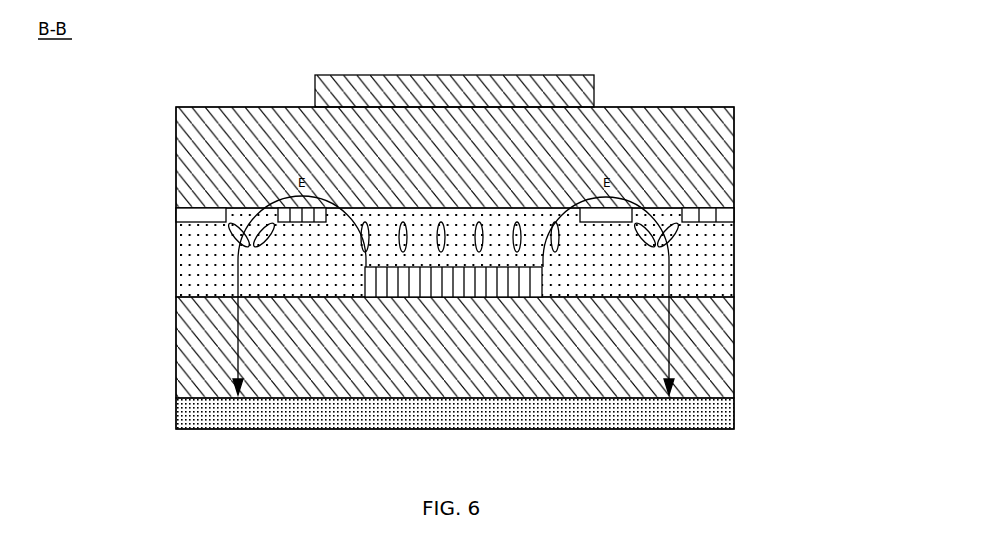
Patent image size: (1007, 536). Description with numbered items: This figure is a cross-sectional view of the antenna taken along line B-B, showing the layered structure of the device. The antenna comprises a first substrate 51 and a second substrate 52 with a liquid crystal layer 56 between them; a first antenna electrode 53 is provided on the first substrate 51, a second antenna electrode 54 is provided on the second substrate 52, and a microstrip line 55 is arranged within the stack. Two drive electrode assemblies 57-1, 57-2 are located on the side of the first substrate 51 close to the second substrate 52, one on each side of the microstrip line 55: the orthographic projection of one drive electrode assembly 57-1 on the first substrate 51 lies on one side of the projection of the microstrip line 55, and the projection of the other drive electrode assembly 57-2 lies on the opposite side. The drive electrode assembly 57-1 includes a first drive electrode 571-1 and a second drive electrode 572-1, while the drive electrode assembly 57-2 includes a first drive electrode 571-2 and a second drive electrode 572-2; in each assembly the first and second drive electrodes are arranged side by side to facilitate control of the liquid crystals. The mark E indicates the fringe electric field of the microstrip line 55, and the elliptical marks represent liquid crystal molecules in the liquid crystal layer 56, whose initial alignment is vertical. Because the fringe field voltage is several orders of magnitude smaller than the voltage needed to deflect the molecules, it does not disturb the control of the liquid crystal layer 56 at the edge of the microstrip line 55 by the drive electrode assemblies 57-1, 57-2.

The first substrate 51 is at (670, 107).
The second substrate 52 is at (735, 358).
The first antenna electrode 53 is at (553, 74).
The second antenna electrode 54 is at (735, 415).
The microstrip line 55 is at (467, 297).
The liquid crystal layer 56 is at (712, 266).
The drive electrode assembly 57-1 is at (189, 183).
The first drive electrode 571-1 is at (197, 207).
The second drive electrode 572-1 is at (288, 207).
The drive electrode assembly 57-2 is at (719, 190).
The first drive electrode 571-2 is at (622, 207).
The second drive electrode 572-2 is at (706, 207).